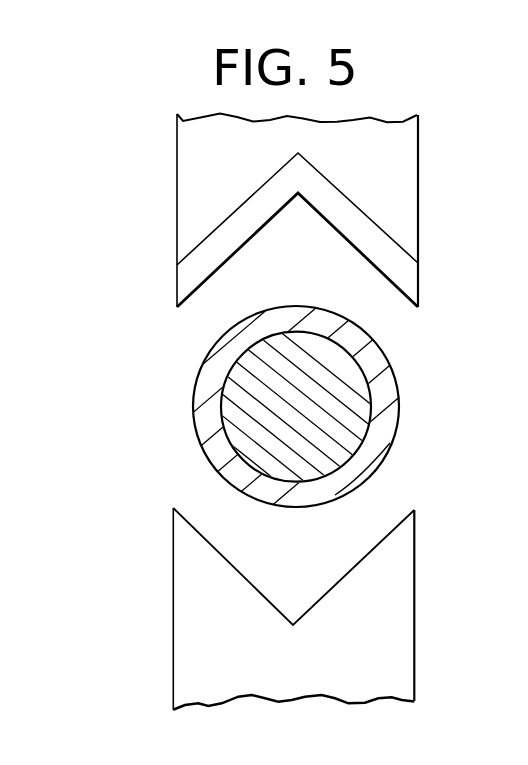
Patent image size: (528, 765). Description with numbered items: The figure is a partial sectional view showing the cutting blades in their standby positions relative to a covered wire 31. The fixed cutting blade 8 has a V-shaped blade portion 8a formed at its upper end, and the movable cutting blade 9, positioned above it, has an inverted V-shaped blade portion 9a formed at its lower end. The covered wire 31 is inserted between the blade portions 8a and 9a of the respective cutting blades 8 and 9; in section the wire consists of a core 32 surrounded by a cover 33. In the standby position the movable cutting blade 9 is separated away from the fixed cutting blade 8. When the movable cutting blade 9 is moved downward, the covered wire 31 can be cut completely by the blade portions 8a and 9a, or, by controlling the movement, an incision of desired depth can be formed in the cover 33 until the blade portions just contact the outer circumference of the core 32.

The fixed cutting blade 8 is at (392, 628).
The V-shaped blade portion 8a is at (322, 607).
The movable cutting blade 9 is at (403, 179).
The inverted V-shaped blade portion 9a is at (360, 243).
The covered wire 31 is at (192, 423).
The core 32 is at (340, 408).
The cover 33 is at (377, 390).